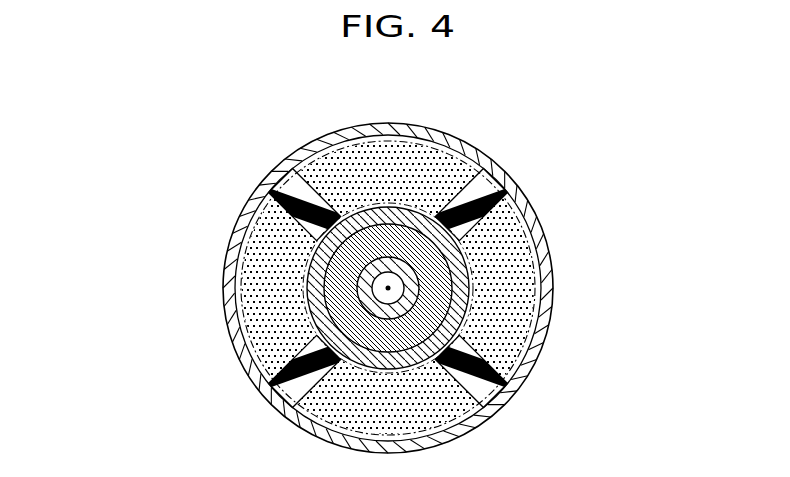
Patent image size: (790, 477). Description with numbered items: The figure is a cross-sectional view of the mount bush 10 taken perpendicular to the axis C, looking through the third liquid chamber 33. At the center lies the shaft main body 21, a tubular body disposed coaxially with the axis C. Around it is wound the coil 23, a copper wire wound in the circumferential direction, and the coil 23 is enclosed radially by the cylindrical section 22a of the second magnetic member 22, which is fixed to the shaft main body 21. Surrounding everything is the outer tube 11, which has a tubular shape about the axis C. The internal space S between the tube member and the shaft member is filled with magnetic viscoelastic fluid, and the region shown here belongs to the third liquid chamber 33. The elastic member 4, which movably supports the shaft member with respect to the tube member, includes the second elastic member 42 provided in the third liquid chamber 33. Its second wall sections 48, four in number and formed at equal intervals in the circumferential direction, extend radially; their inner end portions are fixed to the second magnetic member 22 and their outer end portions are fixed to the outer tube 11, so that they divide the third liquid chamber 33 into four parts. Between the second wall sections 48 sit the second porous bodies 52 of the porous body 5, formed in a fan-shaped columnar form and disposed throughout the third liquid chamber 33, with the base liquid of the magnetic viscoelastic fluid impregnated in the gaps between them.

The mount bush 10 is at (534, 163).
The outer tube 11 is at (282, 165).
The second porous body 52 is at (388, 249).
The porous body 5 is at (338, 137).
The cylindrical section 22a is at (407, 218).
The second magnetic member 22 is at (395, 212).
The coil 23 is at (328, 278).
The shaft main body 21 is at (360, 300).
The third liquid chamber 33 is at (512, 252).
The axis C is at (388, 288).
The second wall section 48 is at (286, 288).
The second elastic member 42 is at (388, 288).
The elastic member 4 is at (248, 352).
The internal space S is at (428, 411).